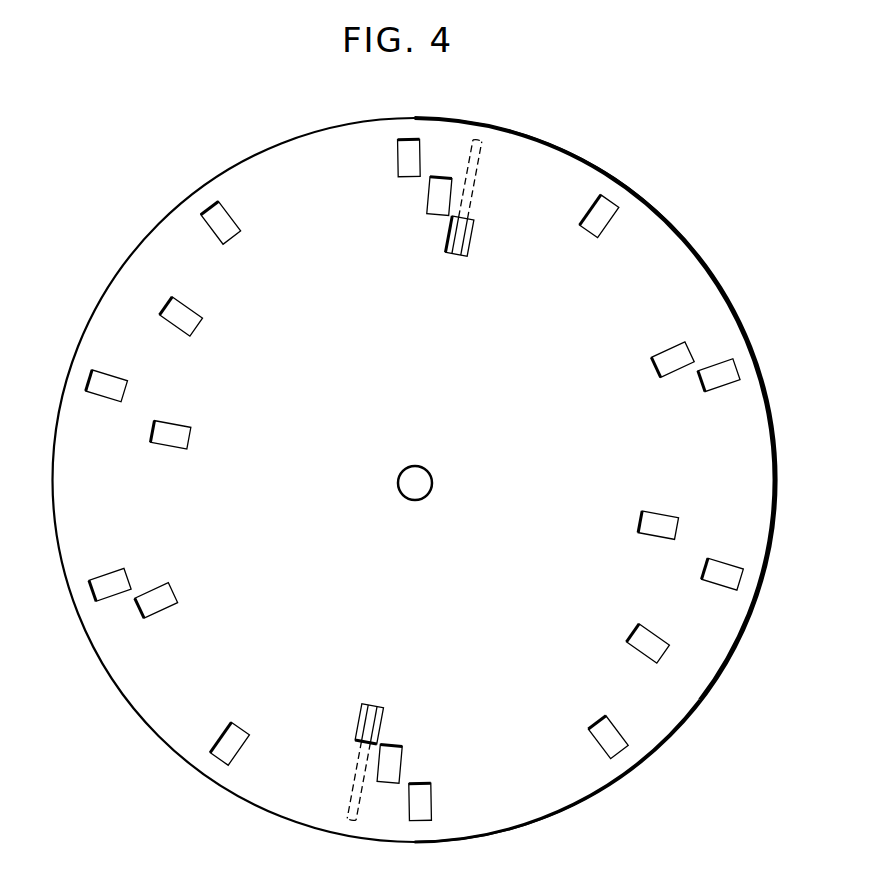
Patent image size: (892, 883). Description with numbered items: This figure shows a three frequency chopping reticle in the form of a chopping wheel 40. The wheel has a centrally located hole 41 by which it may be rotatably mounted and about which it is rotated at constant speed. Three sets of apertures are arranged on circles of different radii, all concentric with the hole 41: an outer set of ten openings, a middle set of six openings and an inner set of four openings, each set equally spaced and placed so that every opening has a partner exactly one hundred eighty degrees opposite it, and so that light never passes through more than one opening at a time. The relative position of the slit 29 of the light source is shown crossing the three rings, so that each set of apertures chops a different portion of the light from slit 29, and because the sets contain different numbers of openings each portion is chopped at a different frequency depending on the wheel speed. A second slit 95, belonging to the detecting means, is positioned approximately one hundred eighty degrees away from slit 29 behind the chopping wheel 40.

The chopping wheel 40 is at (106, 155).
The centrally located hole 41 is at (431, 475).
The slit 29 is at (484, 176).
The slit 95 is at (350, 764).